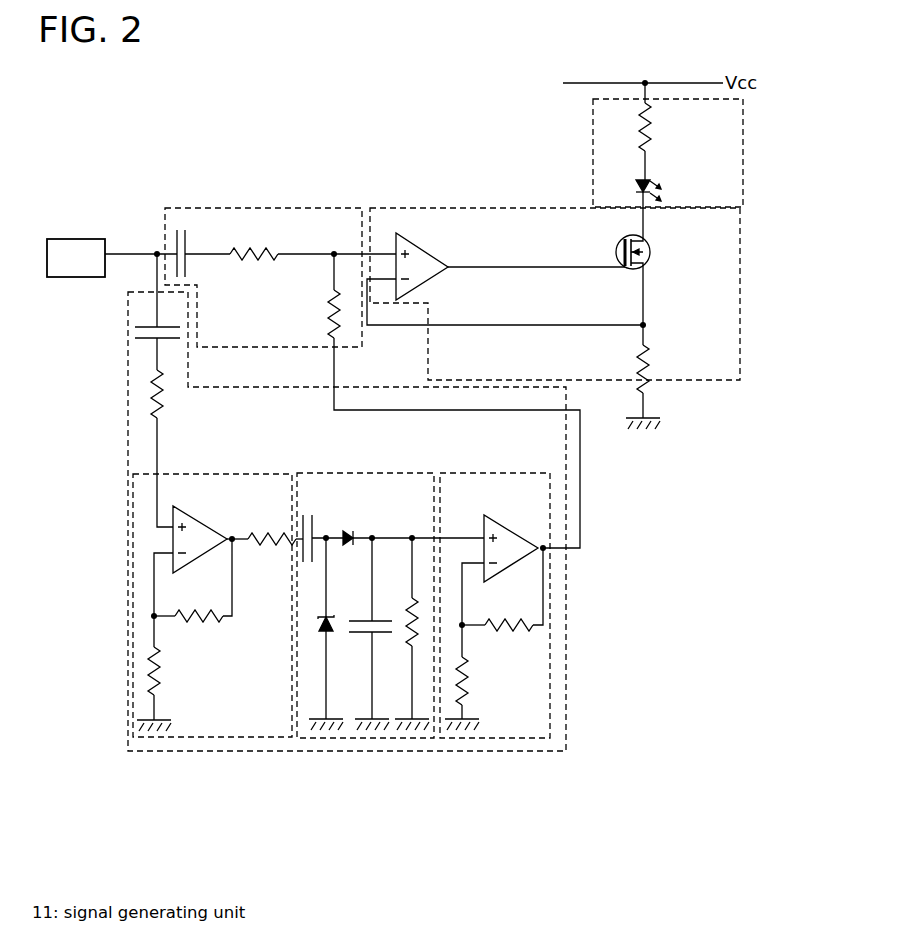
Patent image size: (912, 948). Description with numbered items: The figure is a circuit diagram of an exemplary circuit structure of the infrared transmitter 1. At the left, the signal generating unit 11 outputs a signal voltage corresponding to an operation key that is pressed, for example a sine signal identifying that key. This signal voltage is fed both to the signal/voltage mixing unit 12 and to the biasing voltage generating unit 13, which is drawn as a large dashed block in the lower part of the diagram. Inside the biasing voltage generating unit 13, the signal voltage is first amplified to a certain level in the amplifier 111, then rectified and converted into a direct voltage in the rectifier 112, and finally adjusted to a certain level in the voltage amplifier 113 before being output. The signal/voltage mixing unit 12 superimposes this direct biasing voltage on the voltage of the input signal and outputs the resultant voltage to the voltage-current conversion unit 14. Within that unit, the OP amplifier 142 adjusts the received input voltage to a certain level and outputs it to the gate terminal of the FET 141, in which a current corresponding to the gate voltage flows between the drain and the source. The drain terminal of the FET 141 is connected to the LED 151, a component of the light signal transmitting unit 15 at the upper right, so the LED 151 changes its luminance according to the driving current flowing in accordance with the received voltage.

The transmitter 1 is at (648, 585).
The signal generating unit 11 is at (76, 258).
The signal/voltage mixing unit 12 is at (318, 207).
The biasing voltage generating unit 13 is at (129, 458).
The amplifier 111 is at (202, 740).
The rectifier 112 is at (348, 740).
The voltage amplifier 113 is at (495, 740).
The voltage-current conversion unit 14 is at (688, 385).
The FET 141 is at (656, 258).
The OP amplifier 142 is at (505, 276).
The light signal transmitting unit 15 is at (593, 153).
The LED 151 is at (666, 179).